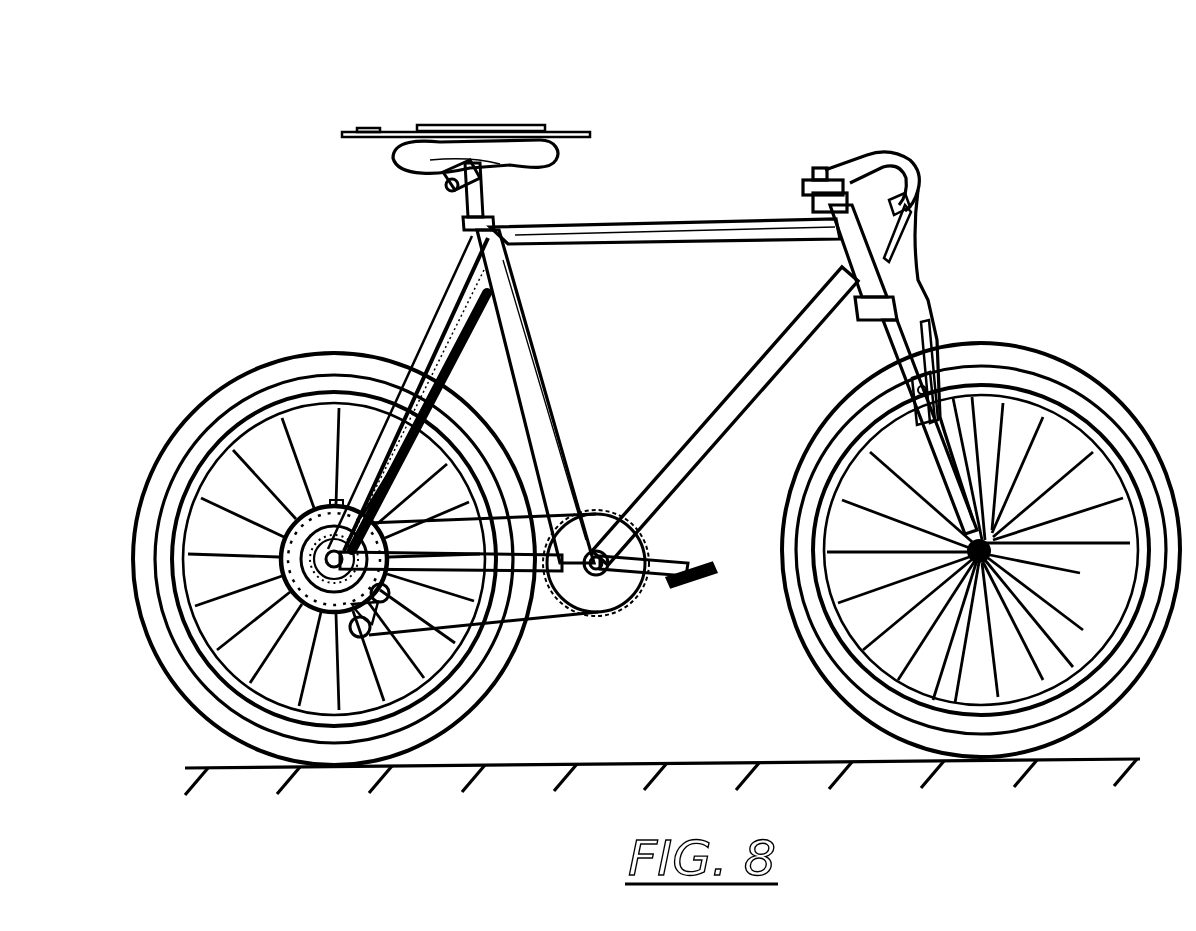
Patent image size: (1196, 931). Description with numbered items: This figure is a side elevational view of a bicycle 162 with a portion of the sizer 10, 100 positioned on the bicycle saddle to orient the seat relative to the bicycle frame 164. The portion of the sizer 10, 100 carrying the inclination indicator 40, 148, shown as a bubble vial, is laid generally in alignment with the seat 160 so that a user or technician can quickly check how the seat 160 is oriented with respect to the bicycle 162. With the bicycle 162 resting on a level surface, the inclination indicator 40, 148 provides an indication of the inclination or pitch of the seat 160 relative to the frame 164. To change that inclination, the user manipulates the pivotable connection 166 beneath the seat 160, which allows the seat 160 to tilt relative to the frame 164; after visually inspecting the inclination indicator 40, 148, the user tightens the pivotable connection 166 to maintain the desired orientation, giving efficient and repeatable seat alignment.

The sizer 10 is at (656, 403).
The sizer 100 is at (656, 418).
The inclination indicator 40 is at (466, 91).
The inclination indicator 148 is at (370, 126).
The seat 160 is at (408, 162).
The bicycle 162 is at (970, 52).
The bicycle frame 164 is at (735, 175).
The pivotable connection 166 is at (447, 188).